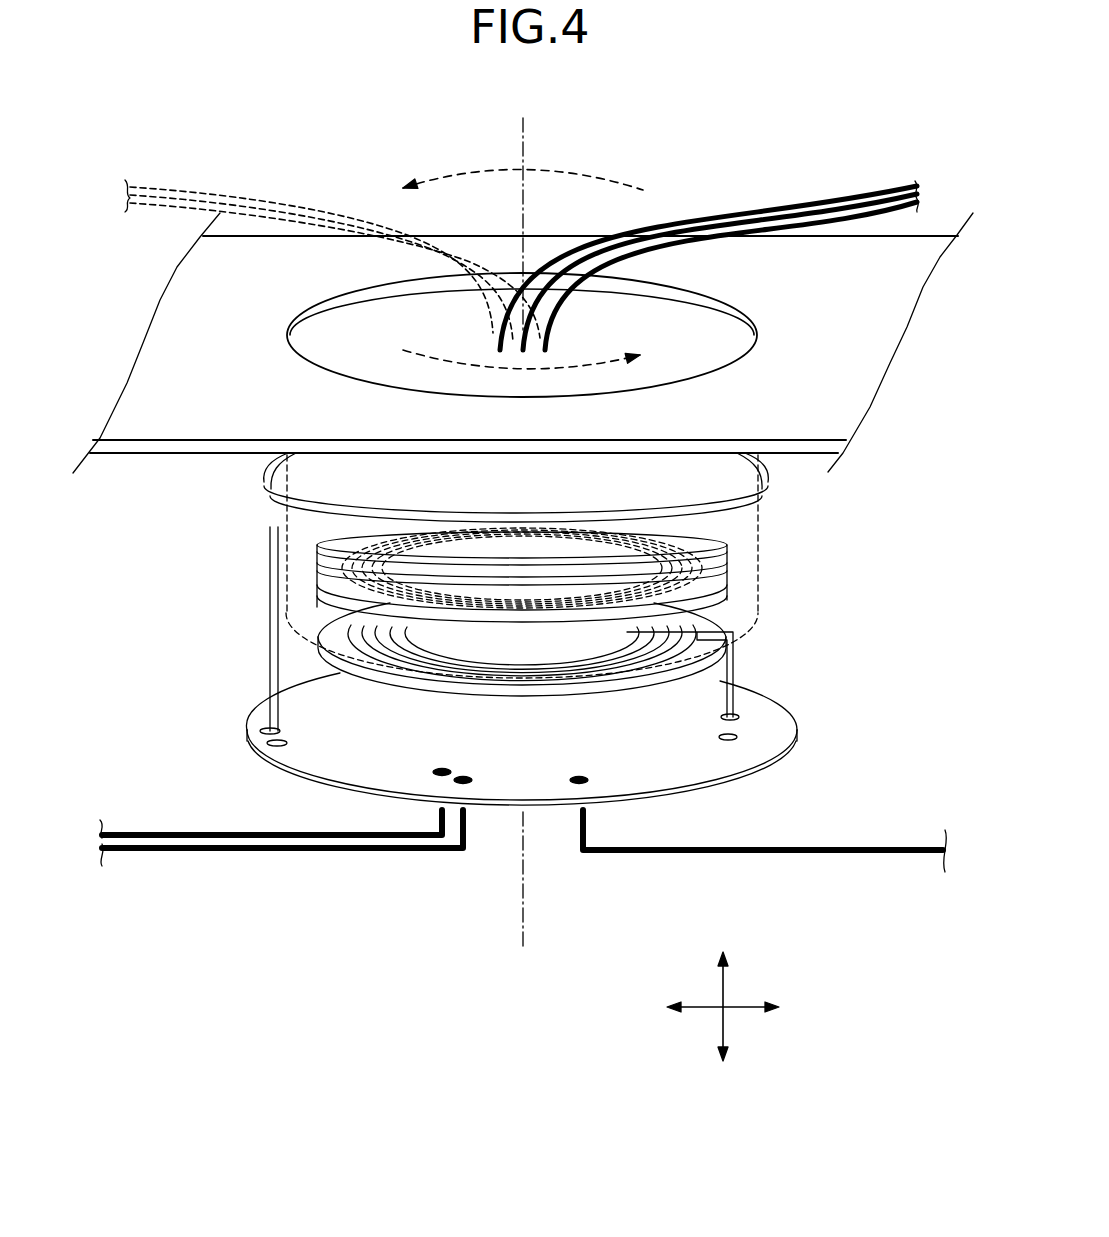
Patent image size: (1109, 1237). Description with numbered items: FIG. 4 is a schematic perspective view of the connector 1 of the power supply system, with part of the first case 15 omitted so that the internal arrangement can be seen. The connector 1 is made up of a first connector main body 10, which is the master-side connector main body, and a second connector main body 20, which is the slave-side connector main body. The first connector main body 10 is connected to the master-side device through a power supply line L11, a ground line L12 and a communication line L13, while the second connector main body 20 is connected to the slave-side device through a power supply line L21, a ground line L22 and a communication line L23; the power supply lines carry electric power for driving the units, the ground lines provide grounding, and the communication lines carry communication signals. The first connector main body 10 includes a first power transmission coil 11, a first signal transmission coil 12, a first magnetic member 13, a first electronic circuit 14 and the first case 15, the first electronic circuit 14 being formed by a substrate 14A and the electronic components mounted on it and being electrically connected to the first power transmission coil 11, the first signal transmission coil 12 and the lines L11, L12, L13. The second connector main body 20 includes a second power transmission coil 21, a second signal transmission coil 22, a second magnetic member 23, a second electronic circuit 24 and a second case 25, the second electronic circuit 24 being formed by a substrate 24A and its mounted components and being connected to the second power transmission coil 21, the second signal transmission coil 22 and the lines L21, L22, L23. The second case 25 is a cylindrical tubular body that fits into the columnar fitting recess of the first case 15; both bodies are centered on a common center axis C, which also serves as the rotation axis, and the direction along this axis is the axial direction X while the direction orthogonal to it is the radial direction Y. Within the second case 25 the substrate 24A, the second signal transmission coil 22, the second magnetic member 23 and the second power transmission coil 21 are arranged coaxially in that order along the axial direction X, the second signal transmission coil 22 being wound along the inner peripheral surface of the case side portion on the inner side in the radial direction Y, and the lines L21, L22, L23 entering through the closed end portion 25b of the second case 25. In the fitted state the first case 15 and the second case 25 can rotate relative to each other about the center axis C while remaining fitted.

The connector 1 is at (100, 510).
The first connector main body 10 is at (185, 617).
The first power transmission coil 11 is at (690, 612).
The first signal transmission coil 12 is at (767, 512).
The first magnetic member 13 is at (700, 682).
The first electronic circuit 14 is at (573, 745).
The substrate 14A is at (722, 765).
The first case 15 is at (843, 398).
The second connector main body 20 is at (353, 352).
The second power transmission coil 21 is at (300, 570).
The second signal transmission coil 22 is at (293, 494).
The second magnetic member 23 is at (356, 586).
The second electronic circuit 24 is at (597, 487).
The substrate 24A is at (768, 490).
The second case 25 is at (760, 577).
The end portion 25b is at (687, 350).
The power supply line L11 is at (193, 832).
The ground line L12 is at (195, 852).
The communication line L13 is at (850, 856).
The power supply line L21 is at (717, 220).
The ground line L22 is at (188, 207).
The communication line L23 is at (372, 223).
The center axis C is at (523, 128).
The axial direction X is at (724, 985).
The radial direction Y is at (748, 1010).